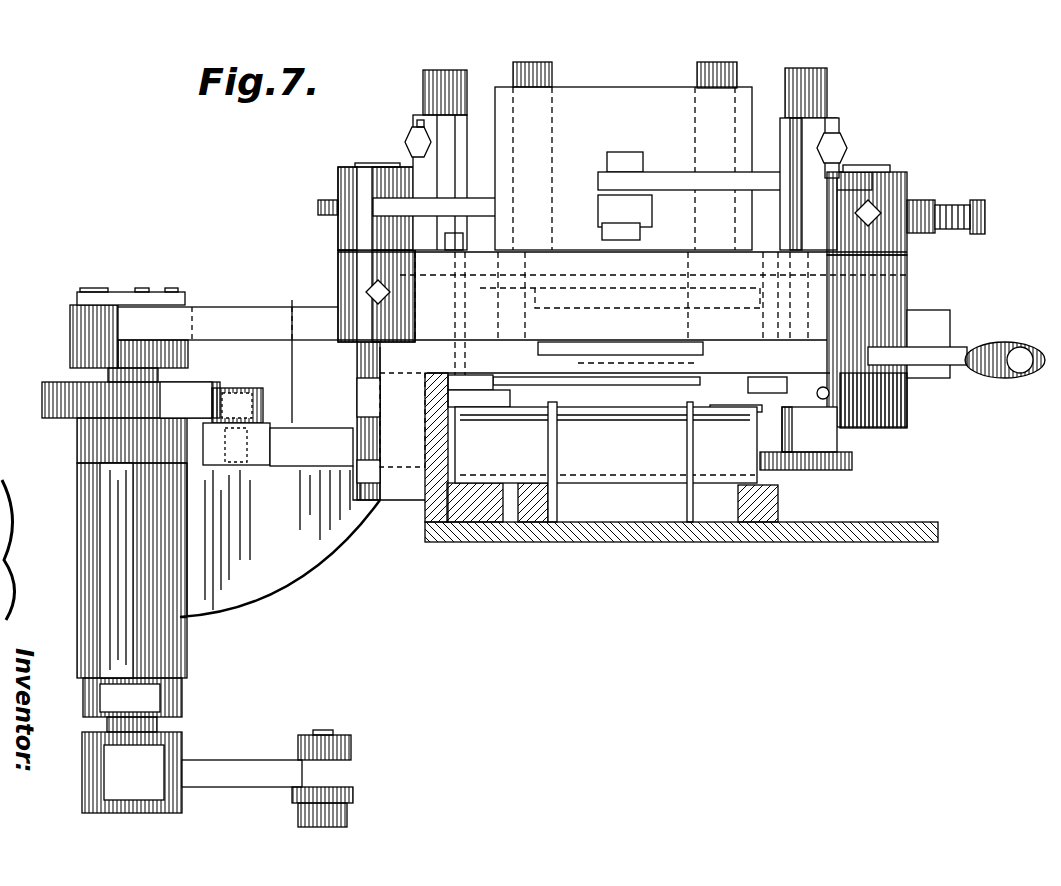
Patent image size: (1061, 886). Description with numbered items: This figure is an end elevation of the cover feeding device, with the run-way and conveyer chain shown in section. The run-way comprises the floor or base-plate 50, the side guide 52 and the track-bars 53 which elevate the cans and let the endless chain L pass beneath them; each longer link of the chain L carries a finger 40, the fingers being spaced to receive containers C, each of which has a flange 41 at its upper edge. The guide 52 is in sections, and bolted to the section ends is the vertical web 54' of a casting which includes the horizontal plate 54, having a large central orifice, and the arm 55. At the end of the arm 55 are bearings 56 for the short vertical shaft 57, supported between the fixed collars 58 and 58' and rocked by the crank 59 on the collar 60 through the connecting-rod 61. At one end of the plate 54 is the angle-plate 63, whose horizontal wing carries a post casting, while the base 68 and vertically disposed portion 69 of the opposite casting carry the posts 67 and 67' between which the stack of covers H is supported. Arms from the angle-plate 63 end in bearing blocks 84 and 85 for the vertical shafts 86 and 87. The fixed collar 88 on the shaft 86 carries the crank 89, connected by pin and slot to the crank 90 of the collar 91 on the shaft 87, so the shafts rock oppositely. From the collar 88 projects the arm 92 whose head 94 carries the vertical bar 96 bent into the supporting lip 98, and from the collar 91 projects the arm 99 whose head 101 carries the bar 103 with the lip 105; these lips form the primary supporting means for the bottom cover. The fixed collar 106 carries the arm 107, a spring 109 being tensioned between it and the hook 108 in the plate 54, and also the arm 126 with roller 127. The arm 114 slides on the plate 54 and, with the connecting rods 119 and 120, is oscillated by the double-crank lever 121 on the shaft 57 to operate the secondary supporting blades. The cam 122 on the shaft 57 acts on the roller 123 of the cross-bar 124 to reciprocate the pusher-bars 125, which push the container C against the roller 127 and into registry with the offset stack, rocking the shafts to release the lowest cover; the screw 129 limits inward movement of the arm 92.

The finger 40 is at (690, 438).
The flange 41 is at (605, 399).
The floor or base-plate 50 is at (640, 542).
The side guide 52 is at (435, 497).
The track-bar 53 is at (478, 522).
The horizontal plate 54 is at (628, 355).
The vertical web 54' is at (389, 442).
The arm 55 is at (283, 573).
The bearing 56 is at (100, 556).
The short vertical shaft 57 is at (108, 376).
The fixed collar 58 is at (122, 429).
The fixed collar 58' is at (108, 701).
The crank 59 is at (258, 768).
The collar 60 is at (84, 764).
The connecting-rod 61 is at (352, 792).
The angle-plate 63 is at (755, 246).
The post 67 is at (625, 74).
The post 67' is at (633, 92).
The base of casting 68 is at (598, 244).
The vertically disposed portion 69 is at (623, 168).
The bearing block 84 is at (907, 290).
The bearing block 85 is at (338, 265).
The vertical shaft 86 is at (872, 171).
The vertical shaft 87 is at (365, 166).
The fixed collar 88 is at (907, 179).
The crank 89 is at (670, 176).
The crank 90 is at (474, 203).
The collar 91 is at (338, 178).
The arm 92 is at (836, 170).
The head 94 is at (836, 141).
The vertical bar 96 is at (781, 152).
The supporting lip 98 is at (766, 373).
The arm 99 is at (318, 207).
The head 101 is at (405, 136).
The bar 103 is at (430, 119).
The supporting lip 105 is at (480, 379).
The fixed collar 106 is at (907, 406).
The arm 107 is at (960, 346).
The hook 108 is at (975, 379).
The spring 109 is at (1005, 342).
The arm 114 is at (248, 318).
The connecting rod 119 is at (176, 297).
The connecting rod 120 is at (112, 300).
The oscillating double-crank lever 121 is at (72, 318).
The cam 122 is at (190, 393).
The roller 123 is at (240, 397).
The cross-bar 124 is at (262, 431).
The pusher-bar 125 is at (300, 470).
The arm 126 is at (812, 426).
The roller 127 is at (845, 471).
The screw 129 is at (972, 196).
The stack of covers H is at (700, 381).
The endless chain L is at (558, 504).
The container C is at (655, 462).